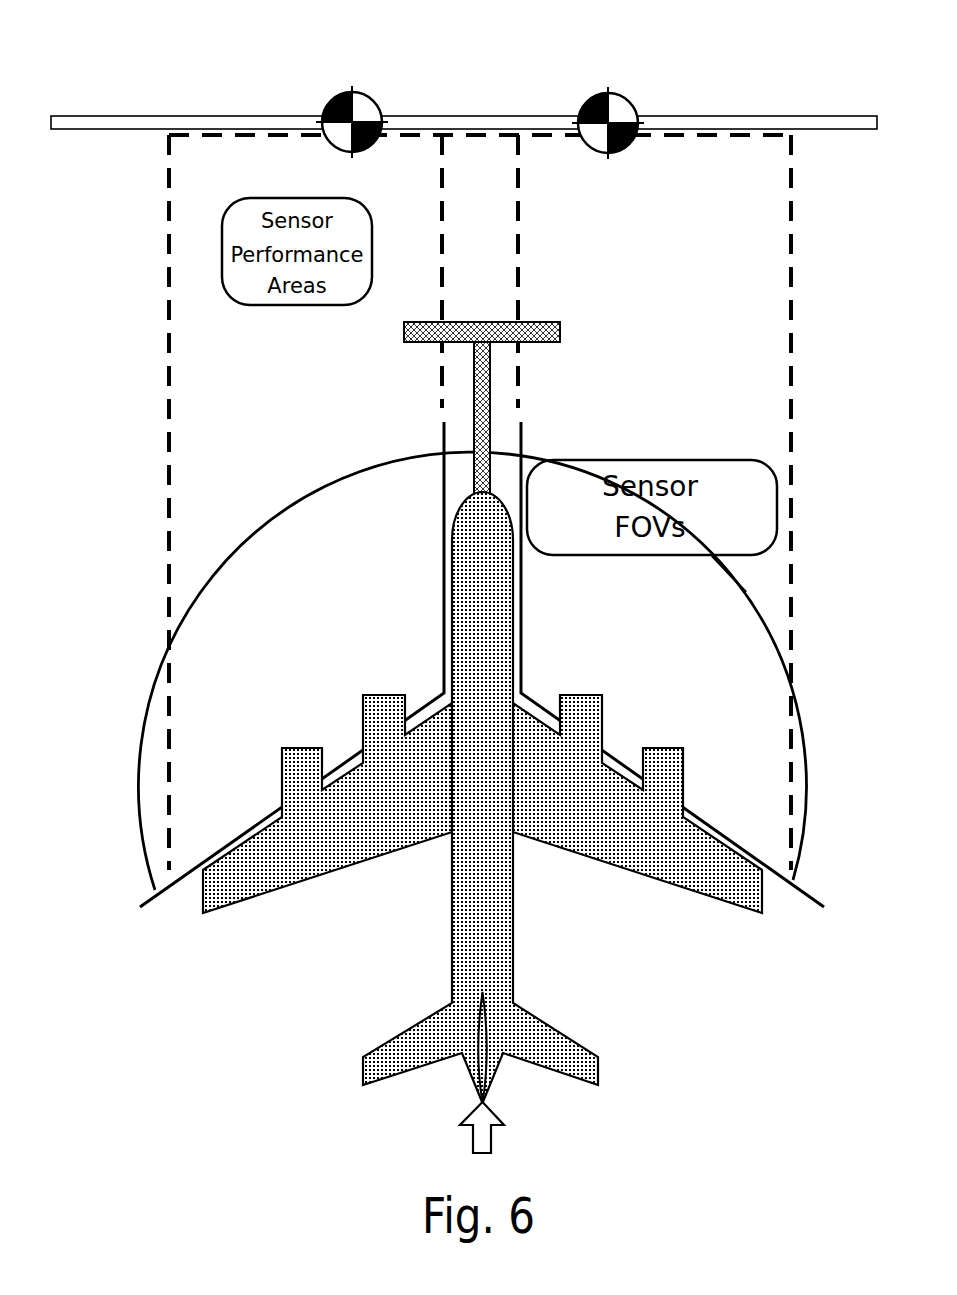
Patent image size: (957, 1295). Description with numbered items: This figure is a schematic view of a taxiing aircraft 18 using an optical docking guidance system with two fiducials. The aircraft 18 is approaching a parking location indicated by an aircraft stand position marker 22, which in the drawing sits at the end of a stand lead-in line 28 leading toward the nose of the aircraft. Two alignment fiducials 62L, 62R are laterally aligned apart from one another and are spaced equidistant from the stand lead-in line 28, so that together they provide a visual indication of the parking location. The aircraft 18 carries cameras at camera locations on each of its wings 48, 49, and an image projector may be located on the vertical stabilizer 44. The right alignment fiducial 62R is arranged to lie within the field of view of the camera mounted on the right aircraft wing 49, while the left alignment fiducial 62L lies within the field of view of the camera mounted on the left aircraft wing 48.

The left alignment fiducial 62L is at (340, 88).
The right alignment fiducial 62R is at (620, 88).
The aircraft stand position marker 22 is at (489, 408).
The stand lead-in line 28 is at (473, 373).
The aircraft 18 is at (482, 797).
The left aircraft wing 48 is at (258, 864).
The right aircraft wing 49 is at (682, 856).
The vertical stabilizer 44 is at (480, 1030).